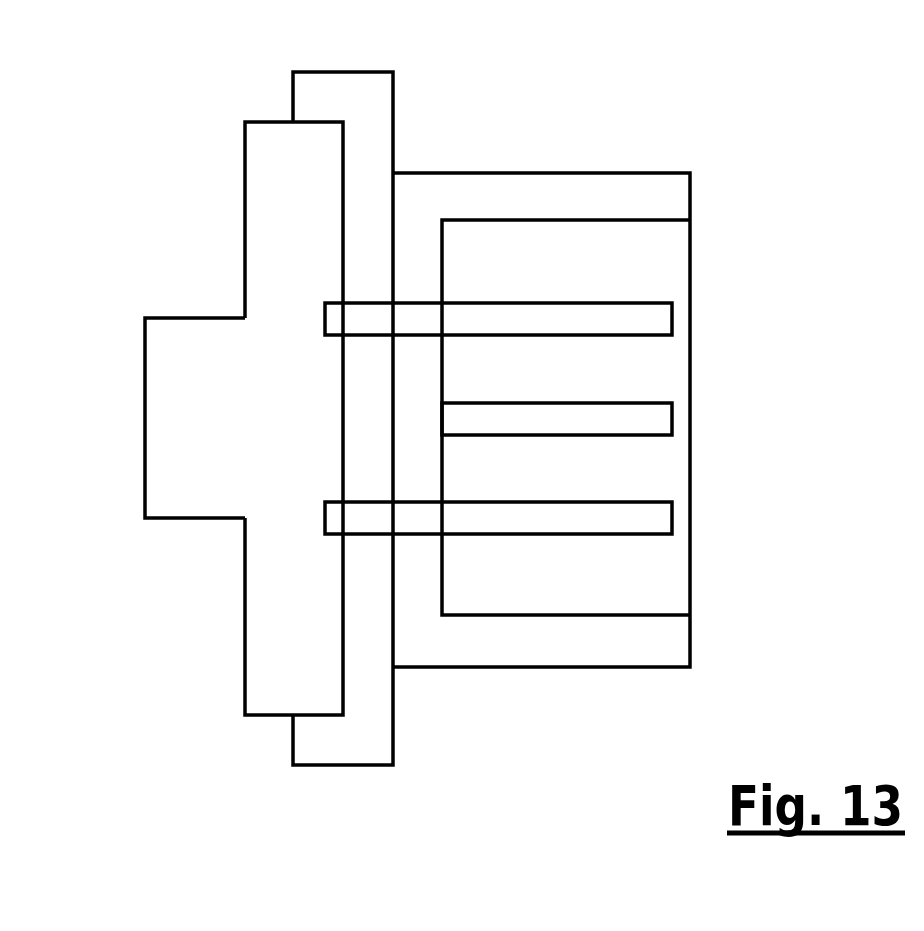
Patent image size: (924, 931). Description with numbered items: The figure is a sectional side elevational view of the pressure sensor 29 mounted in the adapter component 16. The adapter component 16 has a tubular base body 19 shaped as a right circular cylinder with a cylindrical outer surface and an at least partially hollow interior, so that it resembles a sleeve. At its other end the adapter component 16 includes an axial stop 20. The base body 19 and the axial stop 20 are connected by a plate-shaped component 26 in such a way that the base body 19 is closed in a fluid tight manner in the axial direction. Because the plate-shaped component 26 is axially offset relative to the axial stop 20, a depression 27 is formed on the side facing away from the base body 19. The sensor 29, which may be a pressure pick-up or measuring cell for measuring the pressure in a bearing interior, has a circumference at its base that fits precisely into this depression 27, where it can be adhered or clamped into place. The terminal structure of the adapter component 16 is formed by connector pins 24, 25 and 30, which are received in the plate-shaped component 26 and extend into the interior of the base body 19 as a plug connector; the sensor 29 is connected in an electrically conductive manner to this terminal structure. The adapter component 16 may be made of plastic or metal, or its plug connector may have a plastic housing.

The adapter component 16 is at (452, 168).
The tubular base body 19 is at (583, 203).
The axial stop 20 is at (350, 88).
The pin 24 is at (648, 525).
The pin 25 is at (593, 322).
The plate-shaped component 26 is at (363, 663).
The depression 27 is at (312, 125).
The pressure sensor 29 is at (180, 470).
The pin 30 is at (655, 422).